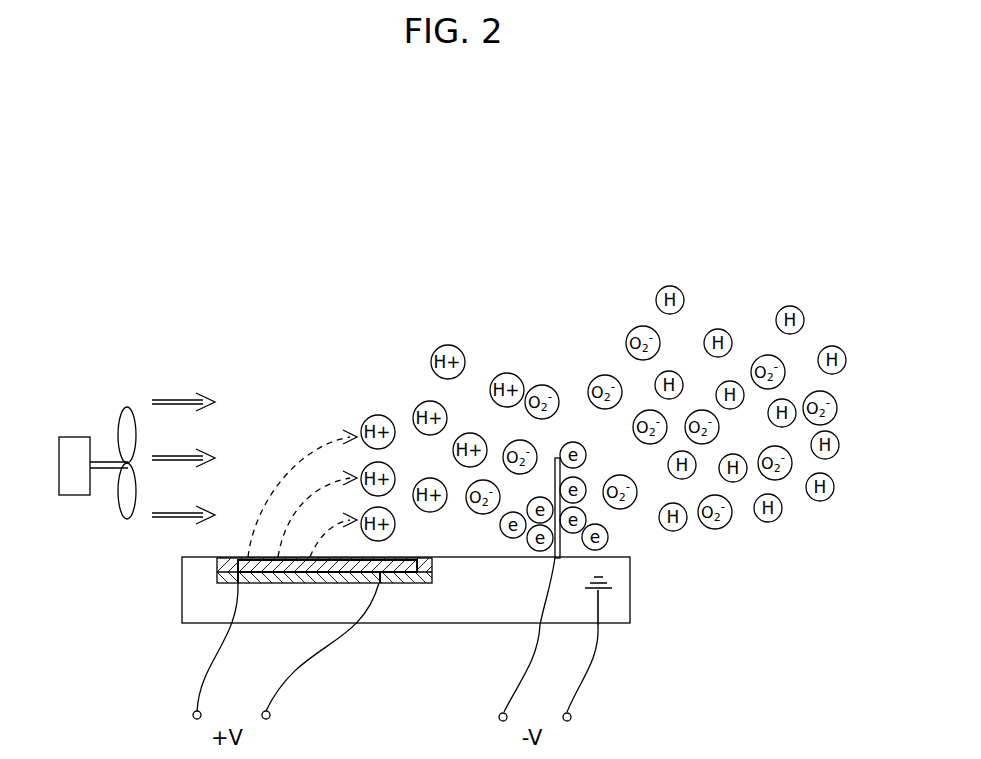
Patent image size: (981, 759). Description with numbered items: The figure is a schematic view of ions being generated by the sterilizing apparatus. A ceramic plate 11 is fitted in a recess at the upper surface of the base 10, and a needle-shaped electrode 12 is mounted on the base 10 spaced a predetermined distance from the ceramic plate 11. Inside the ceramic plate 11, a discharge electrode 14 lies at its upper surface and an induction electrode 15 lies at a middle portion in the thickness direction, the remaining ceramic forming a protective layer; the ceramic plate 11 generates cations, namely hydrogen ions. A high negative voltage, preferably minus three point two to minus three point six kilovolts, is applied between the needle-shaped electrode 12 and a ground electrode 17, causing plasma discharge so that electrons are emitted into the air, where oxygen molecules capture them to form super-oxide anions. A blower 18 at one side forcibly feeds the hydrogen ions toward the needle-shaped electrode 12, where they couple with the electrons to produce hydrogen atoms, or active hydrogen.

The base 10 is at (195, 608).
The ceramic plate 11 is at (226, 569).
The needle-shaped electrode 12 is at (560, 545).
The discharge electrode 14 is at (420, 585).
The induction electrode 15 is at (393, 585).
The ground electrode 17 is at (598, 613).
The blower 18 is at (92, 413).